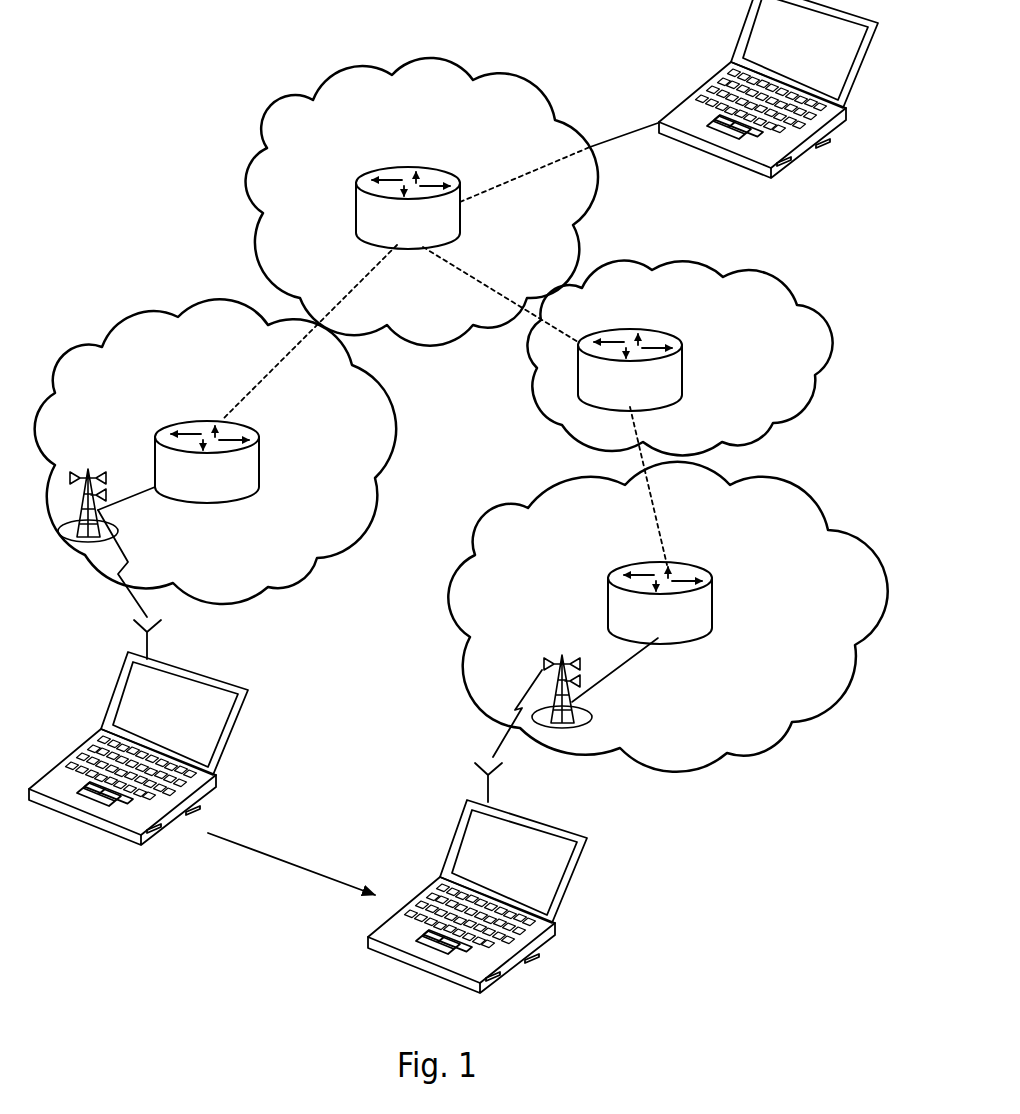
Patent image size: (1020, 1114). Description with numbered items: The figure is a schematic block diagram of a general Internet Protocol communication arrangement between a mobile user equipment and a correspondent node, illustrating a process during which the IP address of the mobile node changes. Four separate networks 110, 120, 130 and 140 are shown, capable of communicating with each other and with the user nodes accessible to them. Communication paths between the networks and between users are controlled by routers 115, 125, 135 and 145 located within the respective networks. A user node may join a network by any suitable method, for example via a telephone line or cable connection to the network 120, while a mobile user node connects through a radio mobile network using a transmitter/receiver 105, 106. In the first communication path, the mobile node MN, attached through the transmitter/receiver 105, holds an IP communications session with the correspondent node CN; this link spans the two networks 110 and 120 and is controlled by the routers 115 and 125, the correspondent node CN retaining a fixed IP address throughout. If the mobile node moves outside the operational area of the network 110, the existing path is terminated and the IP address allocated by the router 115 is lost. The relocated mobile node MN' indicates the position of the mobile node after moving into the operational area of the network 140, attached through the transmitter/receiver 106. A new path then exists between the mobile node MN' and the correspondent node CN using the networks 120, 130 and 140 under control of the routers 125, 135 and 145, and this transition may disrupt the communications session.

The transmitter/receiver 105 is at (118, 530).
The transmitter/receiver 106 is at (593, 717).
The network 110 is at (216, 443).
The router 115 is at (262, 467).
The network 120 is at (387, 202).
The router 125 is at (357, 203).
The network 130 is at (686, 354).
The router 135 is at (683, 370).
The network 140 is at (667, 633).
The router 145 is at (712, 604).
The correspondent node CN is at (817, 146).
The mobile node MN is at (138, 748).
The mobile node MN' is at (485, 878).